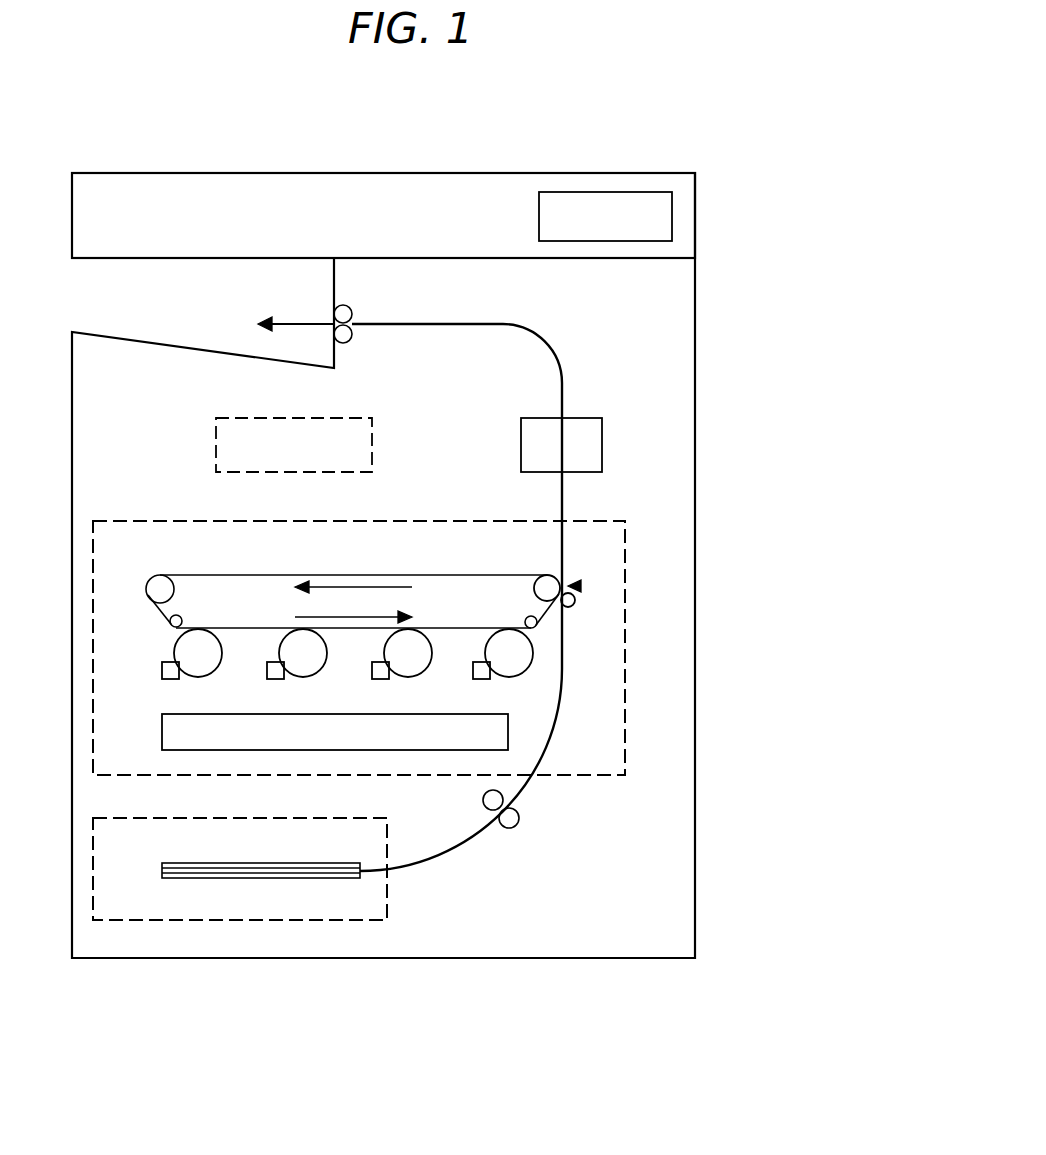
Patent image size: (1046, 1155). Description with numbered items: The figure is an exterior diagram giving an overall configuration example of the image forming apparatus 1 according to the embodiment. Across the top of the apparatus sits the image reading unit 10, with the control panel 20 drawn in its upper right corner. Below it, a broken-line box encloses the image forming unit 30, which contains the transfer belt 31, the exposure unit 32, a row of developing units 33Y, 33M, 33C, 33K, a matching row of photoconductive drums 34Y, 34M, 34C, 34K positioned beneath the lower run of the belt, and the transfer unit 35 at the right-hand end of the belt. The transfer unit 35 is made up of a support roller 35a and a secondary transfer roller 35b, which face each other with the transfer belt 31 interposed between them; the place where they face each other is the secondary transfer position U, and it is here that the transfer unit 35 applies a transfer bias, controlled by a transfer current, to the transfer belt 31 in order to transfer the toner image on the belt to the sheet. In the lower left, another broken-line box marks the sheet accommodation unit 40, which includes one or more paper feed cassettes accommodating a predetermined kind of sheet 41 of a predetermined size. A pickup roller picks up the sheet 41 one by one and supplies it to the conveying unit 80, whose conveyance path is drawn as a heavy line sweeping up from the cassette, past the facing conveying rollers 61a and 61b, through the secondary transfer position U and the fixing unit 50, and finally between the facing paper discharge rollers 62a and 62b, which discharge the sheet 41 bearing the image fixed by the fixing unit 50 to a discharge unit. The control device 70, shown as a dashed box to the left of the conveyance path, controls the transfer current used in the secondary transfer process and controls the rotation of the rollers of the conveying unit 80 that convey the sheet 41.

The image forming apparatus 1 is at (704, 141).
The image reading unit 10 is at (343, 173).
The control panel 20 is at (652, 218).
The image forming unit 30 is at (603, 520).
The transfer belt 31 is at (222, 575).
The exposure unit 32 is at (176, 731).
The developing unit 33Y is at (162, 676).
The developing unit 33M is at (267, 676).
The developing unit 33C is at (372, 676).
The developing unit 33K is at (473, 676).
The photoconductive drum 34Y is at (197, 655).
The photoconductive drum 34M is at (302, 655).
The photoconductive drum 34C is at (407, 655).
The photoconductive drum 34K is at (508, 655).
The transfer unit 35 is at (562, 598).
The support roller 35a is at (548, 581).
The secondary transfer roller 35b is at (572, 607).
The secondary transfer position U is at (580, 586).
The sheet accommodation unit 40 is at (338, 821).
The sheet 41 is at (250, 866).
The fixing unit 50 is at (585, 418).
The conveying roller 61a is at (483, 801).
The conveying roller 61b is at (515, 827).
The paper discharge roller 62a is at (351, 338).
The paper discharge roller 62b is at (351, 310).
The control device 70 is at (326, 418).
The conveying unit 80 is at (553, 346).